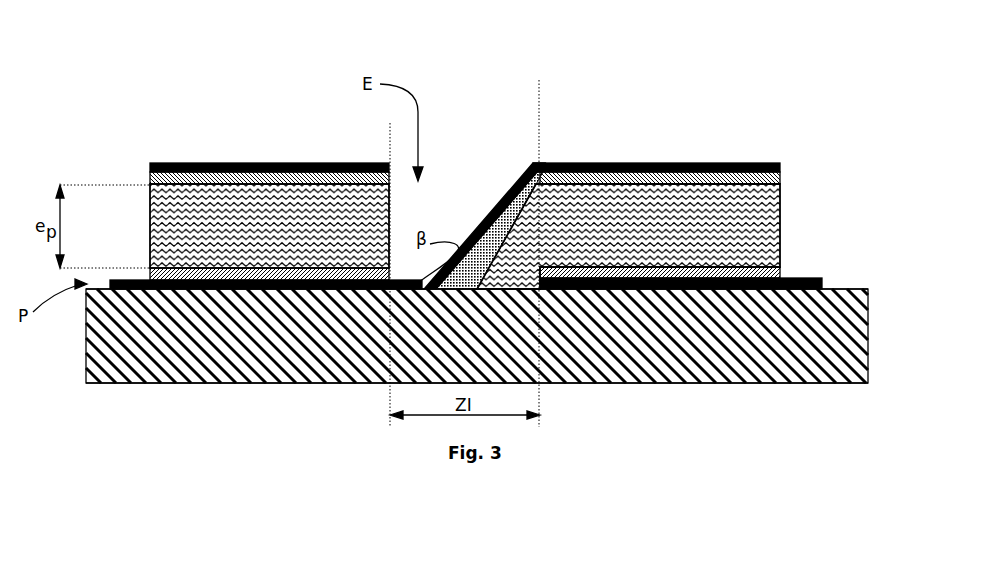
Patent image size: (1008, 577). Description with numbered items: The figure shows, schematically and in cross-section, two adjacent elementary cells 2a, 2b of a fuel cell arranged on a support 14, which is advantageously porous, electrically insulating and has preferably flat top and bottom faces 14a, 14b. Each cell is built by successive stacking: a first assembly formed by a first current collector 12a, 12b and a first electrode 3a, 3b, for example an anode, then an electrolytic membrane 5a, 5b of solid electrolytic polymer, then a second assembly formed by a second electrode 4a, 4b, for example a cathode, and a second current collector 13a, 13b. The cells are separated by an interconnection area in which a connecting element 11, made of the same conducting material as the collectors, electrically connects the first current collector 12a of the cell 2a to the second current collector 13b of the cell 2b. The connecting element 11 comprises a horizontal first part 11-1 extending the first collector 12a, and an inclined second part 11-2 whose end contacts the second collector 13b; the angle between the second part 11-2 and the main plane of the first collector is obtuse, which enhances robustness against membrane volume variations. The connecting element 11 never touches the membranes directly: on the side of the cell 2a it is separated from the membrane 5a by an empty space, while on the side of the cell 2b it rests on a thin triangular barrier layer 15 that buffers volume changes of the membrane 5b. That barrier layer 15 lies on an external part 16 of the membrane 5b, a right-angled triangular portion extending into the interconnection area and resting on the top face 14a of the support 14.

The elementary cell 2a is at (298, 330).
The elementary cell 2b is at (740, 320).
The first electrode 3a is at (192, 268).
The first electrode 3b is at (780, 266).
The second electrode 4a is at (150, 180).
The second electrode 4b is at (736, 184).
The electrolytic membrane 5a is at (297, 228).
The electrolytic membrane 5b is at (637, 220).
The connecting element 11 is at (462, 226).
The first part of connecting element 11-1 is at (420, 290).
The second part of connecting element 11-2 is at (497, 206).
The first current collector 12a is at (150, 272).
The first current collector 12b is at (812, 278).
The second current collector 13a is at (223, 163).
The second current collector 13b is at (731, 163).
The support 14 is at (850, 310).
The top face of support 14a is at (850, 288).
The bottom face of support 14b is at (125, 383).
The thin barrier layer 15 is at (510, 188).
The external part of electrolytic membrane 16 is at (517, 290).